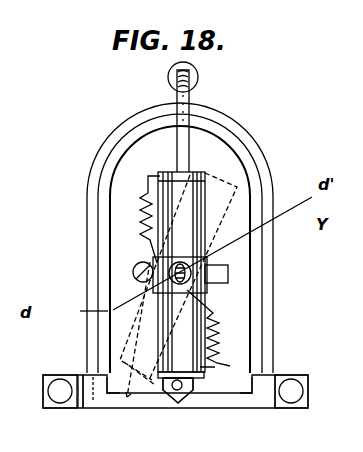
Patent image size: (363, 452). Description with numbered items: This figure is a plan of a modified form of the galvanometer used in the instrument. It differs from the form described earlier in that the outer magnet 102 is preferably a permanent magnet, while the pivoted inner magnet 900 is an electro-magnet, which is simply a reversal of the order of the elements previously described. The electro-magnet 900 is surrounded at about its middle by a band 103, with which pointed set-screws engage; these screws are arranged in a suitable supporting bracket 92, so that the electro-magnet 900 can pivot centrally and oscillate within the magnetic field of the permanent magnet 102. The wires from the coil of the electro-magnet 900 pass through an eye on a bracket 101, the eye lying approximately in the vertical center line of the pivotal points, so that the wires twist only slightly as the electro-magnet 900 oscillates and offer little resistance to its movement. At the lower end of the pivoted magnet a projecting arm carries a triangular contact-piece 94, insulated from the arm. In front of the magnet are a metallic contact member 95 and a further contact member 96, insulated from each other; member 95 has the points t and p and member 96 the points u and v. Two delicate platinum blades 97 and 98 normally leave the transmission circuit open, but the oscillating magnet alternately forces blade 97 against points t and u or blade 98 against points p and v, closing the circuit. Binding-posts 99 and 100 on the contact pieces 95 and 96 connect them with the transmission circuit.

The supporting bracket 92 is at (190, 275).
The triangular contact-piece 94 is at (190, 388).
The metallic contact member 95 is at (92, 402).
The contact member 96 is at (283, 406).
The platinum blade 97 is at (117, 385).
The platinum blade 98 is at (240, 383).
The binding-post 99 is at (60, 391).
The binding-post 100 is at (291, 391).
The bracket 101 is at (185, 157).
The magnet 102 is at (273, 258).
The band 103 is at (153, 292).
The electro-magnet 900 is at (181, 287).